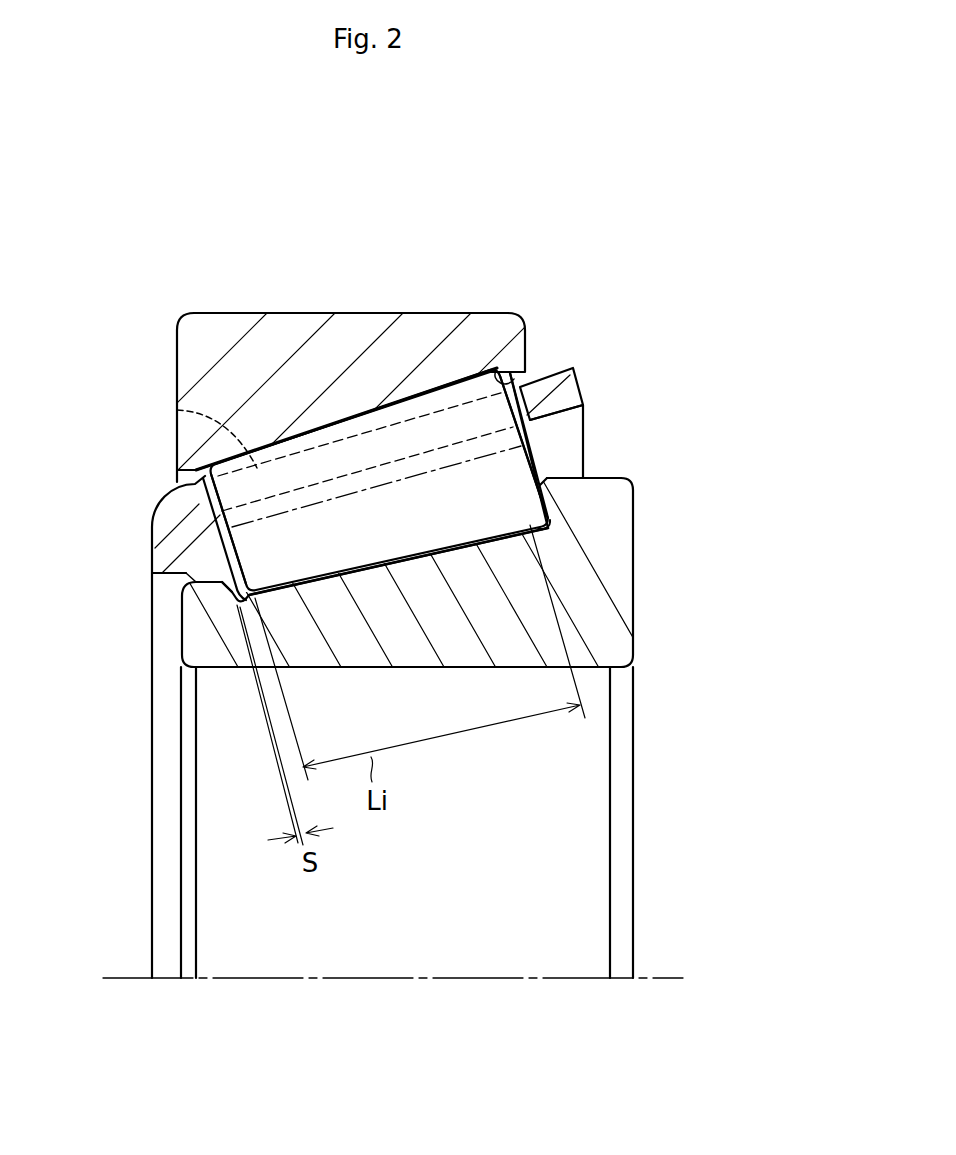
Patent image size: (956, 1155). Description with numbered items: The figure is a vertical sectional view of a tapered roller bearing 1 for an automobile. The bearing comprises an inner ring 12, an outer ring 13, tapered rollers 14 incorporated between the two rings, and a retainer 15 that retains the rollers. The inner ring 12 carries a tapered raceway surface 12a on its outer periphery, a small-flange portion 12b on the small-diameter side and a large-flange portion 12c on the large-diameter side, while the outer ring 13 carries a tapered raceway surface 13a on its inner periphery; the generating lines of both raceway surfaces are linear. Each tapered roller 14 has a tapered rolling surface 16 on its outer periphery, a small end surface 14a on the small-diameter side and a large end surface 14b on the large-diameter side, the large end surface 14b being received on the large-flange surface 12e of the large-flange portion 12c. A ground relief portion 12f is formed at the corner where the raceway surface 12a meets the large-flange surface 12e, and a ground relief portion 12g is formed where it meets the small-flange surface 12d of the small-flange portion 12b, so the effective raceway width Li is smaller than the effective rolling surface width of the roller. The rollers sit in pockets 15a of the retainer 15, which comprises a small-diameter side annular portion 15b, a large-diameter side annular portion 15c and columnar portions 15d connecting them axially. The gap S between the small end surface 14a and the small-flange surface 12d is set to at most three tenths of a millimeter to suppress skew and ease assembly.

The tapered roller bearing 1 is at (562, 215).
The inner ring 12 is at (511, 648).
The raceway surface 12a is at (445, 539).
The small-flange portion 12b is at (205, 601).
The large-flange portion 12c is at (602, 500).
The small-flange surface 12d is at (206, 598).
The large-flange surface 12e is at (548, 442).
The ground relief portion 12f is at (552, 518).
The ground relief portion 12g is at (185, 573).
The outer ring 13 is at (328, 343).
The raceway surface 13a is at (316, 436).
The tapered roller 14 is at (439, 413).
The small end surface 14a is at (205, 538).
The large end surface 14b is at (520, 424).
The retainer 15 is at (585, 364).
The pocket 15a is at (503, 366).
The small-diameter side annular portion 15b is at (180, 506).
The large-diameter side annular portion 15c is at (547, 400).
The columnar portion 15d is at (177, 412).
The rolling surface 16 is at (370, 408).